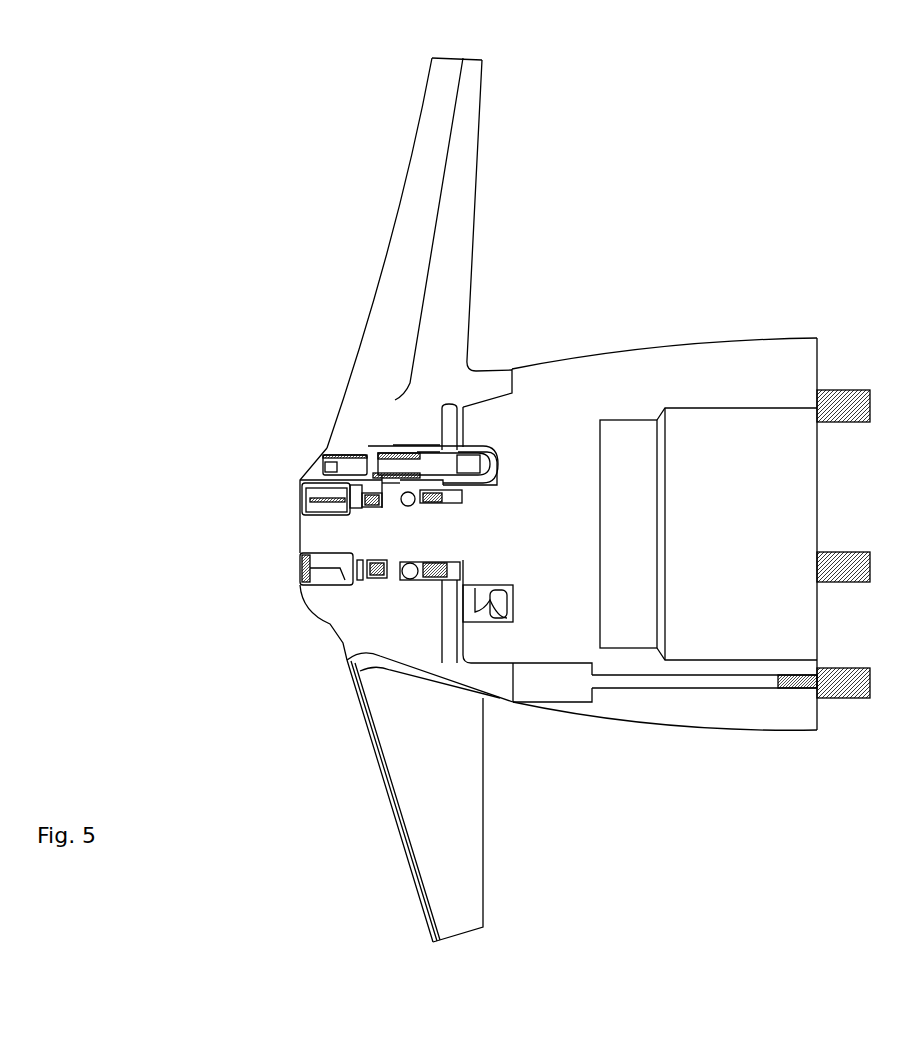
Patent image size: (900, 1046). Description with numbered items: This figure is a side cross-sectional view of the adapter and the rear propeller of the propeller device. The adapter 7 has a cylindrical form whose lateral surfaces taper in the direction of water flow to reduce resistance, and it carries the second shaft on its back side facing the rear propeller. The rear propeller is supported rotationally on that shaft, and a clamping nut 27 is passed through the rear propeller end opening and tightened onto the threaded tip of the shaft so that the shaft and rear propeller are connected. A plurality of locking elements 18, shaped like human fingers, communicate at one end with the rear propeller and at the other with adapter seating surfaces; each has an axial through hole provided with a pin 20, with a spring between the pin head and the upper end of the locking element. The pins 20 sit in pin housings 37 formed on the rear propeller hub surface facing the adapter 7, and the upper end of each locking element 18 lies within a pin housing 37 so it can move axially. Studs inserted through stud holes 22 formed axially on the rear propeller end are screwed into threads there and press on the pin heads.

The adapter 7 is at (697, 283).
The locking element 18 is at (490, 455).
The pin 20 is at (368, 448).
The stud hole 22 is at (305, 458).
The clamping nut 27 is at (303, 570).
The pin housing 37 is at (395, 450).